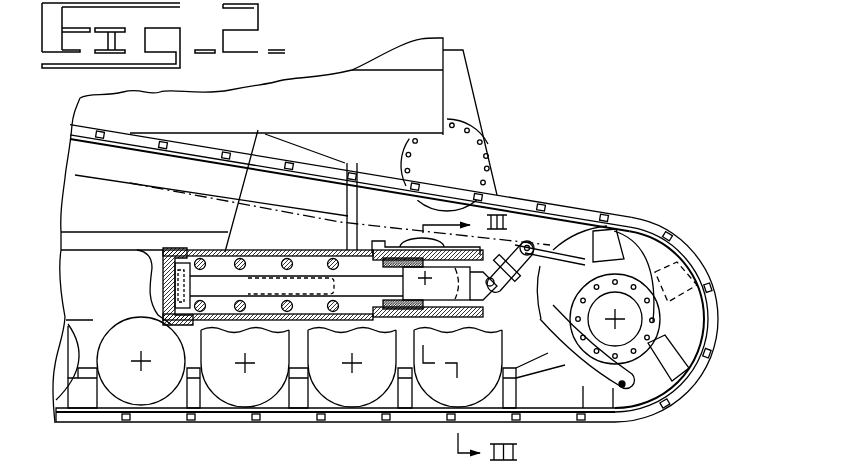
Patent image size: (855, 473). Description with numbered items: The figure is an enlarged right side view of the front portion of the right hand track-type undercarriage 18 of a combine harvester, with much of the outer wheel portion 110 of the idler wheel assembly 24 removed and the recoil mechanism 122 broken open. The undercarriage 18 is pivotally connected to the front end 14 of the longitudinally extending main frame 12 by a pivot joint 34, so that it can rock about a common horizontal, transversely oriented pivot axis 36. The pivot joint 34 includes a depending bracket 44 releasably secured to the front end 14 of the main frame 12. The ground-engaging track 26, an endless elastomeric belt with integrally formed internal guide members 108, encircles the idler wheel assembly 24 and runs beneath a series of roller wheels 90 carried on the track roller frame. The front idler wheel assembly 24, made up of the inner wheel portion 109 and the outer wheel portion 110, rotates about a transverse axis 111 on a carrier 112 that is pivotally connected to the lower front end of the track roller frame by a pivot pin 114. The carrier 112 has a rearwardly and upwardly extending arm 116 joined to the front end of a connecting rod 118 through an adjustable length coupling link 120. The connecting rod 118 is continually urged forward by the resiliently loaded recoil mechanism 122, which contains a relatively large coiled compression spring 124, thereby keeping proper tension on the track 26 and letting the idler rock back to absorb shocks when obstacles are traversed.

The main frame 12 is at (450, 69).
The front end 14 is at (358, 101).
The right hand track-type undercarriage 18 is at (84, 276).
The idler wheel assembly 24 is at (649, 242).
The ground-engaging track 26 is at (261, 144).
The pivot joint 34 is at (386, 330).
The pivot axis 36 is at (386, 287).
The depending bracket 44 is at (486, 122).
The roller wheel 90 is at (139, 318).
The internal guide members 108 is at (397, 397).
The inner wheel portion 109 is at (557, 330).
The outer wheel portion 110 is at (705, 268).
The transverse axis 111 is at (626, 316).
The carrier 112 is at (681, 389).
The pivot pin 114 is at (627, 412).
The arm 116 is at (542, 262).
The connecting rod 118 is at (479, 322).
The adjustable length coupling link 120 is at (517, 238).
The recoil mechanism 122 is at (207, 244).
The coiled compression spring 124 is at (272, 325).